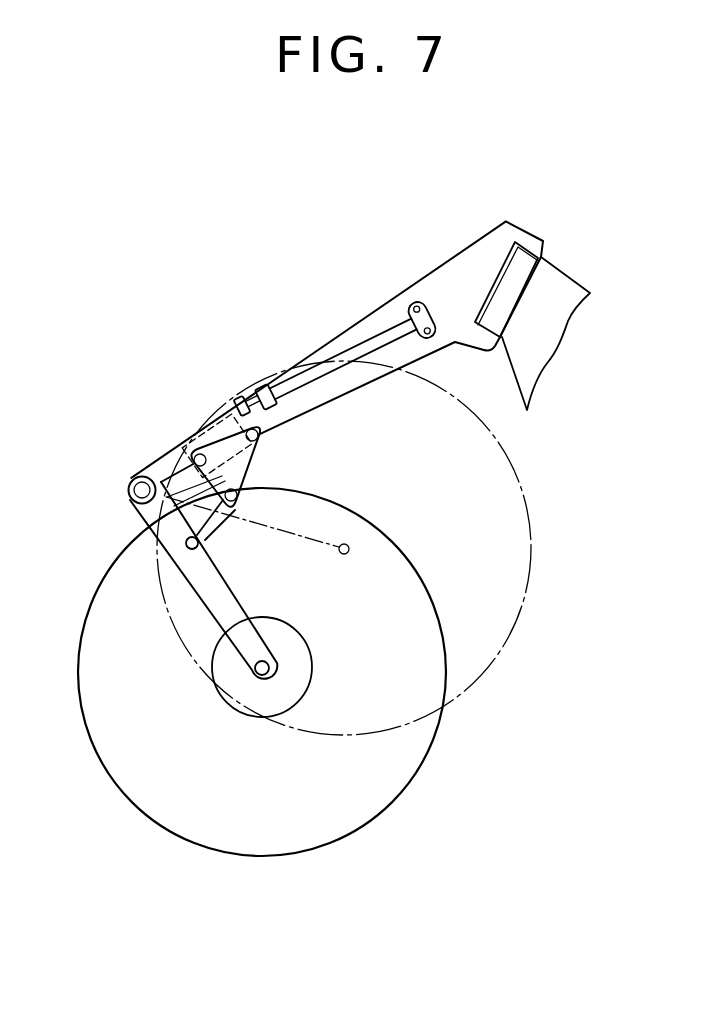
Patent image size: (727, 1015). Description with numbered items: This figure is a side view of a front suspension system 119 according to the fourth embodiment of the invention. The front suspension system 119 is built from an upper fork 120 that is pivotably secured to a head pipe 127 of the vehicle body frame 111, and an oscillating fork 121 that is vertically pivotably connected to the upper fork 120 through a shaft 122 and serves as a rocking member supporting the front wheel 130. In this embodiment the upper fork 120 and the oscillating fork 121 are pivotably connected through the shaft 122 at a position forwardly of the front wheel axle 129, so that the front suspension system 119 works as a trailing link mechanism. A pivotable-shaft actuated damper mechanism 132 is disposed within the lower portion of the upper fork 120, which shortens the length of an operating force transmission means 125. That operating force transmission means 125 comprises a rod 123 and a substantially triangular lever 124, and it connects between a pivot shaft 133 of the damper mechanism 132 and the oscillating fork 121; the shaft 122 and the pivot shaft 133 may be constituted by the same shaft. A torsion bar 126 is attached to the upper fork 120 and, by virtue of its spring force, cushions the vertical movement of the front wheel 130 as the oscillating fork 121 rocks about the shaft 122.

The vehicle body frame 111 is at (550, 332).
The front suspension system 119 is at (343, 446).
The upper fork 120 is at (376, 323).
The oscillating fork 121 is at (220, 602).
The shaft 122 is at (130, 497).
The rod 123 is at (213, 523).
The substantially triangular lever 124 is at (250, 463).
The operating force transmission means 125 is at (264, 501).
The torsion bar 126 is at (323, 367).
The head pipe 127 is at (510, 282).
The front wheel axle 129 is at (270, 669).
The front wheel 130 is at (263, 856).
The pivotable-shaft actuated damper mechanism 132 is at (200, 416).
The pivot shaft 133 is at (182, 462).